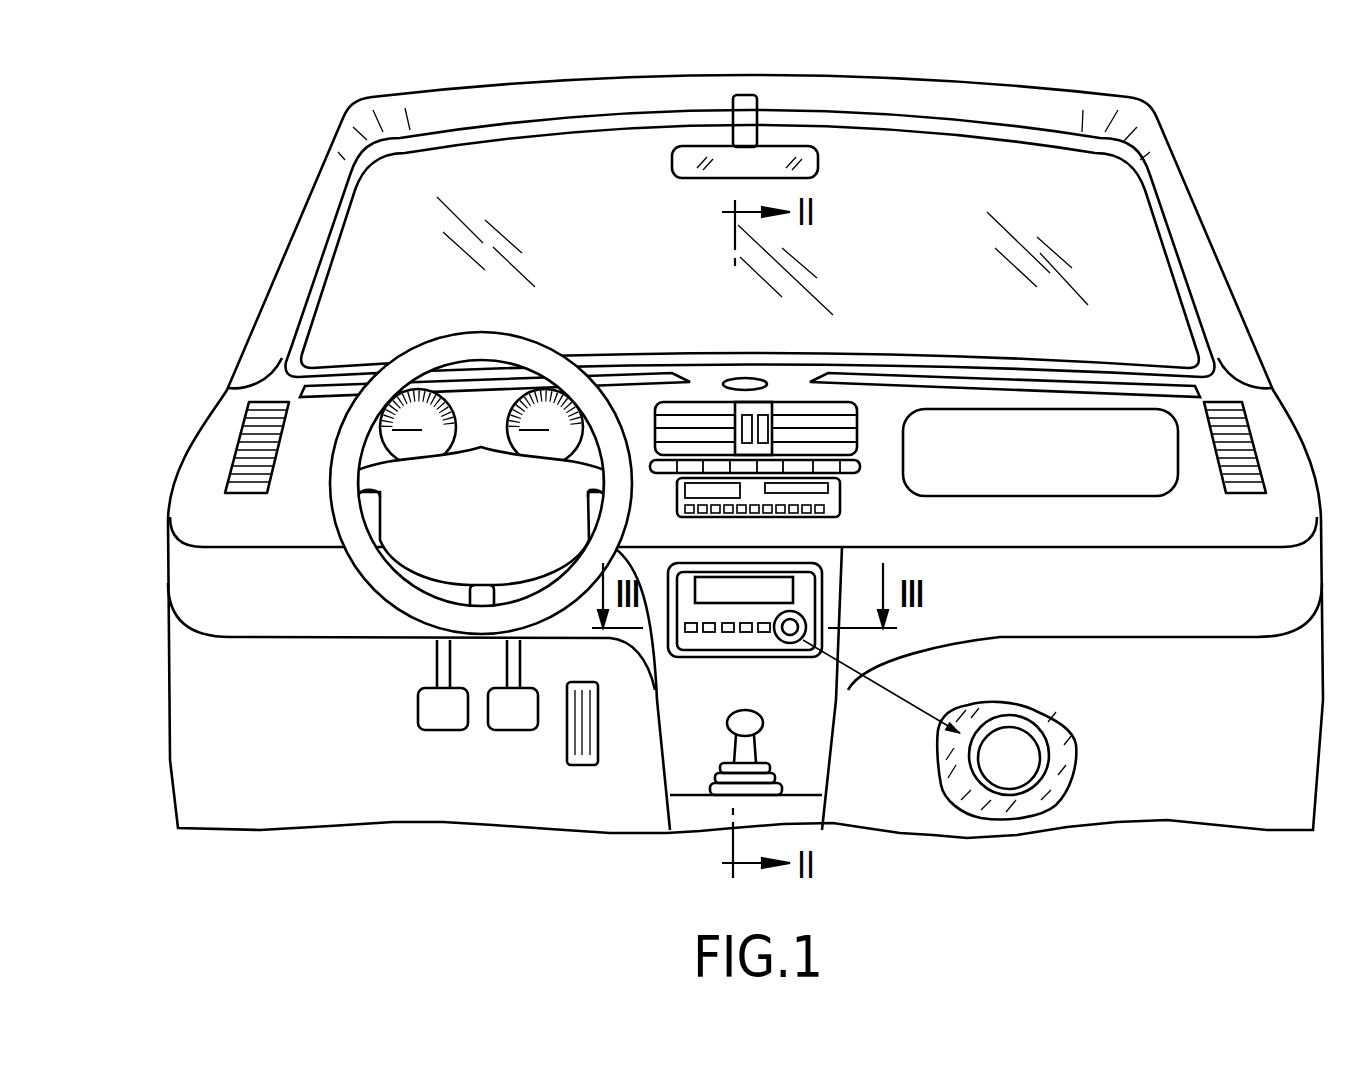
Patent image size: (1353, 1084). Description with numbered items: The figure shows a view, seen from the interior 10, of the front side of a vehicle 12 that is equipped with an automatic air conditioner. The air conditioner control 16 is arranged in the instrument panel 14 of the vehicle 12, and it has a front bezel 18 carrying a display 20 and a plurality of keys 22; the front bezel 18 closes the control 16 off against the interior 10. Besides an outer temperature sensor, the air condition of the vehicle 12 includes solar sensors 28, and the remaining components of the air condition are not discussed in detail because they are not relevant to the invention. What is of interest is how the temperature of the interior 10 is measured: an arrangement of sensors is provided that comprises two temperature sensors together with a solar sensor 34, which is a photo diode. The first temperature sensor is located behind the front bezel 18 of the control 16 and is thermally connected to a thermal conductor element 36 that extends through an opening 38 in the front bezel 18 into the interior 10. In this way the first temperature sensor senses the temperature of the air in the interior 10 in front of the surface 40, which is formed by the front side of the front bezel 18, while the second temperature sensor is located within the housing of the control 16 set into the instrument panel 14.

The interior 10 is at (1197, 692).
The vehicle 12 is at (260, 170).
The instrument panel 14 is at (873, 407).
The air conditioner control 16 is at (814, 612).
The front bezel 18 is at (660, 558).
The display 20 is at (777, 588).
The keys 22 is at (692, 634).
The solar sensors 28 is at (745, 384).
The solar sensor 34 is at (1018, 743).
The thermal conductor element 36 is at (1020, 735).
The opening 38 is at (1058, 760).
The surface 40 is at (682, 578).